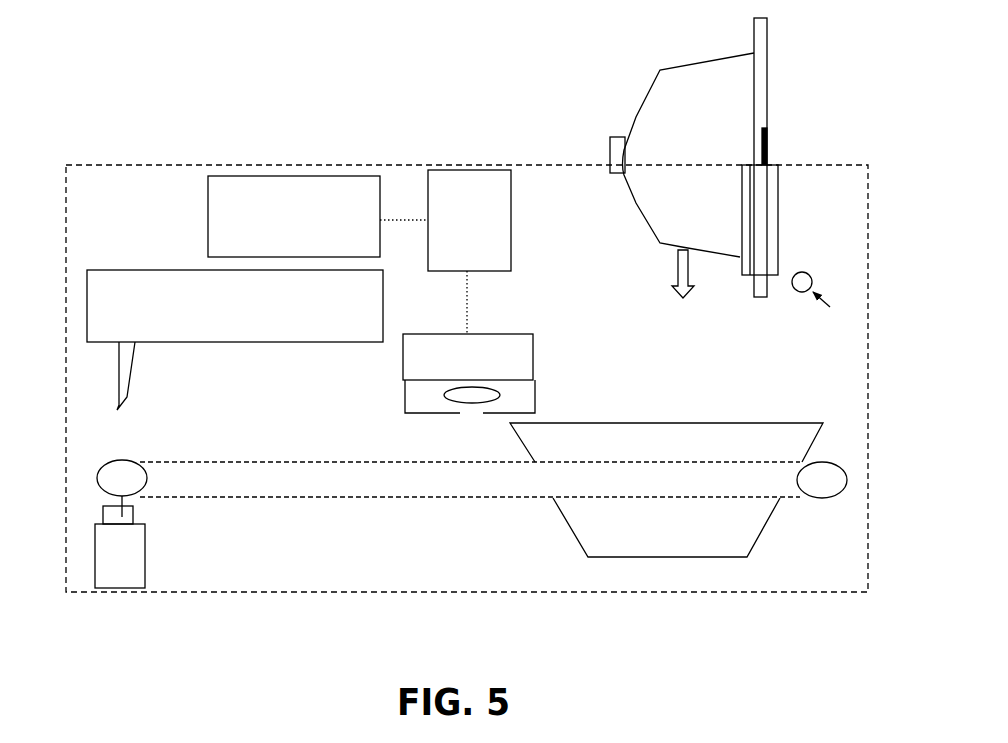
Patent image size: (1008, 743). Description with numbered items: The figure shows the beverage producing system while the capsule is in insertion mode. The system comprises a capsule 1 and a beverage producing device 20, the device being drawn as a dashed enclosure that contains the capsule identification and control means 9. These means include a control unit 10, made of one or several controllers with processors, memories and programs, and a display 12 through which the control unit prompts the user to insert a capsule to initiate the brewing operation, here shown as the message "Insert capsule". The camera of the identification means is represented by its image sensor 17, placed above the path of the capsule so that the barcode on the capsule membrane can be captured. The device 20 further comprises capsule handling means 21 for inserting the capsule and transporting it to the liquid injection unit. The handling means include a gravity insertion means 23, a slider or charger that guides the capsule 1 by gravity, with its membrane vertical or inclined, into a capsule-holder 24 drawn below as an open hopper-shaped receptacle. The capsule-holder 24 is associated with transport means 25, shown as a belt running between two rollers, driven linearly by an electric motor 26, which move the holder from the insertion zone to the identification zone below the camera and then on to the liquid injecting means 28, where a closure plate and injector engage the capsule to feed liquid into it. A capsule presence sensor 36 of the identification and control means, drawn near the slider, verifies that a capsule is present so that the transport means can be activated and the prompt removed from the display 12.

The capsule 1 is at (550, 85).
The capsule identification and control means 9 is at (317, 97).
The control unit 10 is at (460, 176).
The display 12 is at (292, 178).
The image sensor 17 is at (540, 377).
The beverage producing device 20 is at (170, 160).
The capsule handling means 21 is at (795, 187).
The gravity insertion means 23 is at (773, 163).
The capsule-holder 24 is at (652, 553).
The transport means 25 is at (203, 498).
The electric motor 26 is at (130, 538).
The liquid injecting means 28 is at (138, 268).
The capsule presence sensor 36 is at (807, 293).